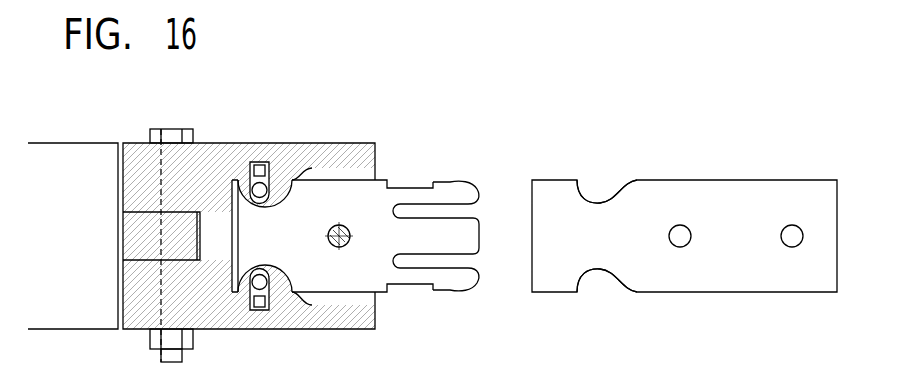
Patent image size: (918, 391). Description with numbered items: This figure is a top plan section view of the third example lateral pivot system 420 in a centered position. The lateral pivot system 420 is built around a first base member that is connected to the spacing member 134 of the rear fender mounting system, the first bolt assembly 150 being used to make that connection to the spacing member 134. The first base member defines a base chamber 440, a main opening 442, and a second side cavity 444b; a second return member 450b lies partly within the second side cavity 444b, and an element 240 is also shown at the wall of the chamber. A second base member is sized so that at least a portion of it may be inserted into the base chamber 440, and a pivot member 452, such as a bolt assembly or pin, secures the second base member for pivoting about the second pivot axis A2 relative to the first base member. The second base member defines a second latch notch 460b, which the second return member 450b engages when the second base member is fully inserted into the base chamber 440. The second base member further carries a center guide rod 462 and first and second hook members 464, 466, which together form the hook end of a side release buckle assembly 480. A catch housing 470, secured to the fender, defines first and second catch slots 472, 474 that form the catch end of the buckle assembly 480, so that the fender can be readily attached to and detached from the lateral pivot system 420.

The spacing member 134 is at (73, 155).
The first bolt assembly 150 is at (148, 129).
The plate 240 is at (235, 188).
The third example lateral pivot system 420 is at (329, 208).
The base chamber 440 is at (340, 172).
The main opening 442 is at (379, 170).
The second side cavity 444b is at (243, 187).
The second return member 450b is at (272, 177).
The second latch notch 460b is at (282, 193).
The pivot member 452 is at (347, 244).
The second pivot axis A2 is at (328, 231).
The center guide rod 462 is at (463, 237).
The first hook member 464 is at (457, 280).
The second hook member 466 is at (460, 190).
The catch housing 470 is at (684, 233).
The first catch slot 472 is at (580, 285).
The second catch slot 474 is at (580, 187).
The side release buckle assembly 480 is at (684, 253).